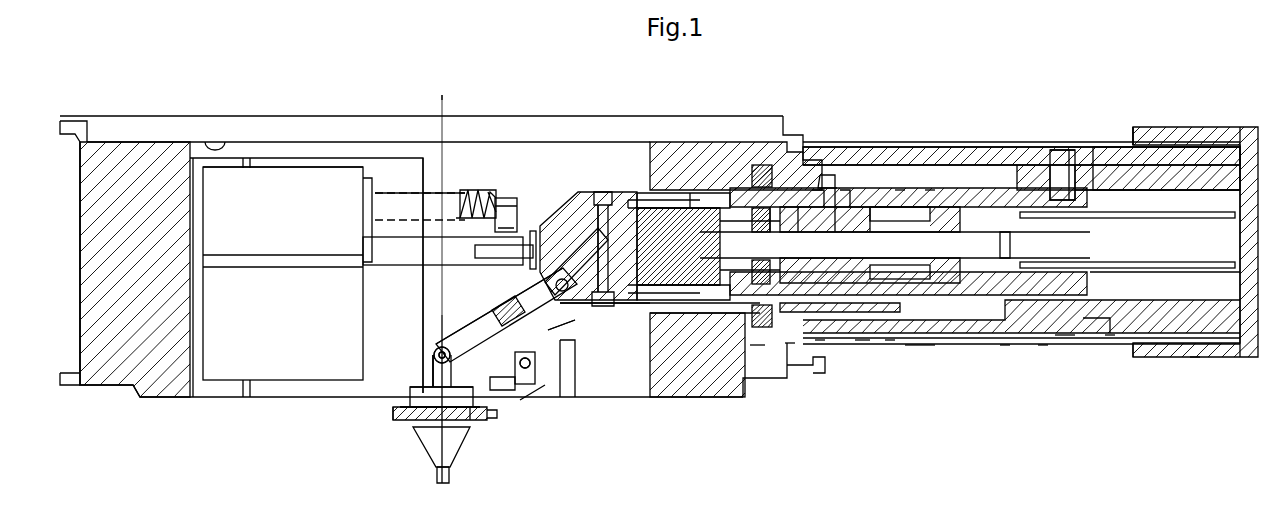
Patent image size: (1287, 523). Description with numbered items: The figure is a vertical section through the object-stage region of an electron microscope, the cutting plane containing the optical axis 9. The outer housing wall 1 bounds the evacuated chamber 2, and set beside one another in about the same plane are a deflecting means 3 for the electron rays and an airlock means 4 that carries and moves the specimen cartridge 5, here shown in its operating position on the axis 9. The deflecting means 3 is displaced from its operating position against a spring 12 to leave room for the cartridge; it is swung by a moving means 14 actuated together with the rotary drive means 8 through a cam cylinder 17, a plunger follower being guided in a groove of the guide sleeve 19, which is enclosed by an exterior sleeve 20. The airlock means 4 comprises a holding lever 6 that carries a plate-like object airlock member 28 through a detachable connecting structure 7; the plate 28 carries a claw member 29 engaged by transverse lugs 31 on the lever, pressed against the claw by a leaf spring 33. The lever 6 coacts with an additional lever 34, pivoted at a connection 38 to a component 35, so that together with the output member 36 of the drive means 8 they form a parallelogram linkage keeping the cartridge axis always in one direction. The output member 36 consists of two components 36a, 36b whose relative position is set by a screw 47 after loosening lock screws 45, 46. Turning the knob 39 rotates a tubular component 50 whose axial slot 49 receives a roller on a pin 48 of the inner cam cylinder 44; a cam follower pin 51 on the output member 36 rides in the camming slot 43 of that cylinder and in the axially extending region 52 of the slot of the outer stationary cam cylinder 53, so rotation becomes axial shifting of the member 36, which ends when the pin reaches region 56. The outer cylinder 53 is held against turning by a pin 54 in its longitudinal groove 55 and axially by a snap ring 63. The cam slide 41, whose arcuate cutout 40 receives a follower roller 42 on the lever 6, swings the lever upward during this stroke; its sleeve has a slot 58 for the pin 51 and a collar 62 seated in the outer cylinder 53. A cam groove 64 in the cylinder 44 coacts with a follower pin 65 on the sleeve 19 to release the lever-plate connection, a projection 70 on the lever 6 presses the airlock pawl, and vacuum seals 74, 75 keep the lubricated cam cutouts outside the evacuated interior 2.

The outer housing wall 1 is at (92, 158).
The evacuated chamber 2 is at (448, 170).
The deflecting means 3 is at (222, 185).
The airlock means 4 is at (580, 312).
The specimen cartridge 5 is at (437, 456).
The holding lever 6 is at (485, 332).
The detachable connecting structure 7 is at (378, 405).
The rotary drive means 8 is at (1060, 335).
The optical axis 9 is at (445, 108).
The spring 12 is at (432, 195).
The moving means 14 is at (468, 207).
The cam cylinder 17 is at (1200, 158).
The guide sleeve 19 is at (962, 158).
The exterior sleeve 20 is at (1172, 147).
The object airlock member 28 is at (404, 412).
The claw member 29 is at (416, 392).
The transverse lugs 31 is at (436, 380).
The leaf spring 33 is at (476, 412).
The additional lever 34 is at (443, 355).
The component 35 is at (452, 370).
The output member 36 is at (657, 215).
The output member component 36a is at (770, 210).
The output member component 36b is at (798, 215).
The pivotal connection 38 is at (440, 350).
The manually engageable member 39 is at (1138, 135).
The arcuate cutout 40 is at (628, 205).
The cam slide 41 is at (603, 200).
The cam-follower roller 42 is at (592, 322).
The camming slot 43 is at (818, 205).
The inner cam cylinder 44 is at (790, 350).
The lock screw 45 is at (1005, 235).
The lock screw 46 is at (1070, 335).
The adjusting screw 47 is at (1005, 345).
The pin 48 is at (1043, 345).
The axially extending slot 49 is at (1110, 335).
The tubular component 50 is at (1195, 358).
The cam follower pin 51 is at (873, 210).
The axially extending slot region 52 is at (845, 200).
The outer cam cylinder 53 is at (820, 340).
The ring 54 is at (912, 345).
The longitudinal groove 55 is at (862, 340).
The cam slot region 56 is at (900, 190).
The axially extending slot 58 is at (928, 190).
The collar 62 is at (890, 340).
The snap ring 63 is at (928, 345).
The cam groove 64 is at (1080, 185).
The cam follower pin 65 is at (1055, 160).
The projection 70 is at (598, 312).
The vacuum seal 74 is at (688, 200).
The vacuum seal 75 is at (757, 350).